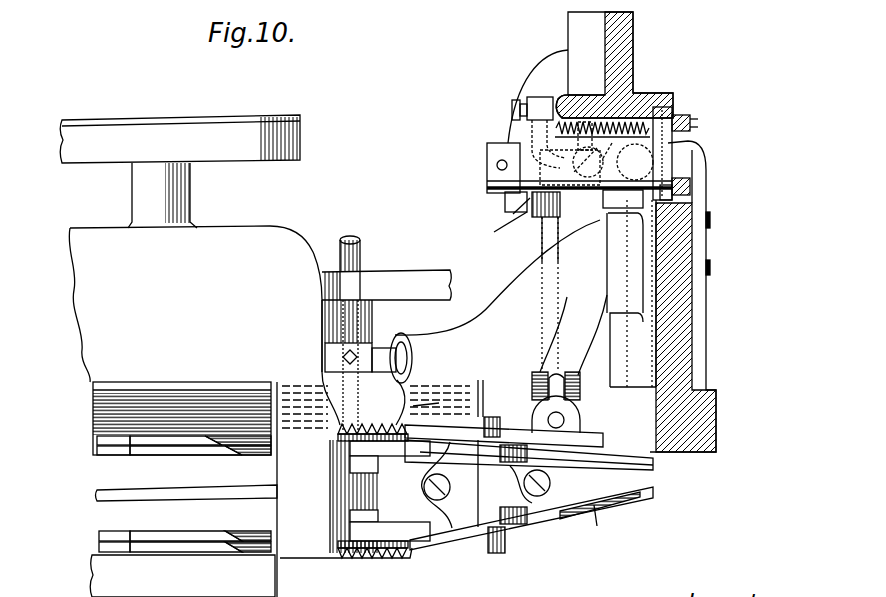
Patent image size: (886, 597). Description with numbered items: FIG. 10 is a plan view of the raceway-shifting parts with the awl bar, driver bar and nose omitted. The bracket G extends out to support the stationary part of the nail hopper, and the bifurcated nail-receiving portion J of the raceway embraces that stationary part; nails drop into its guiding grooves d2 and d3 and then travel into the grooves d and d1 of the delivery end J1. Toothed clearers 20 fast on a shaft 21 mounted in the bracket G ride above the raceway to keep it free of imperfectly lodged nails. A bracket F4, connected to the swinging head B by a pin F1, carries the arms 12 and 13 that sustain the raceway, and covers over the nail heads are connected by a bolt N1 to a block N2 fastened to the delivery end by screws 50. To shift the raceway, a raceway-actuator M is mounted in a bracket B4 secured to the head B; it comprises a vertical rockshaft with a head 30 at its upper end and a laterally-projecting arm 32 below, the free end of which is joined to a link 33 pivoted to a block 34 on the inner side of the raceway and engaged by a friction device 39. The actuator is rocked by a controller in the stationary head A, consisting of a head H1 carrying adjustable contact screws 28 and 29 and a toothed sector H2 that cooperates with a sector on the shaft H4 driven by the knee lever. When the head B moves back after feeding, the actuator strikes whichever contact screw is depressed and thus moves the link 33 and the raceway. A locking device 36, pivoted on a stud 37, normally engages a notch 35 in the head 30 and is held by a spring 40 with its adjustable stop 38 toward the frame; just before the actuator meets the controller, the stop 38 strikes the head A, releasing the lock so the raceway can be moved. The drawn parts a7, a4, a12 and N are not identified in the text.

The upper arm of frame a7 is at (302, 147).
The frame body a4 is at (293, 240).
The frame block a12 is at (250, 576).
The nail-guiding groove d3 is at (200, 447).
The nail-guiding groove d2 is at (191, 541).
The nail-receiving portion of the raceway J is at (252, 538).
The shaft 21 is at (350, 238).
The bracket G is at (416, 277).
The toothed clearers 20 is at (382, 424).
The arm 13 is at (495, 418).
The bolt N1 is at (503, 556).
The arm 12 is at (435, 401).
The block 34 is at (574, 430).
The nail-guiding groove d1 is at (655, 464).
The nail-guiding groove d is at (655, 492).
The jaw lever N is at (598, 457).
The screws 50 is at (447, 483).
The block N2 is at (477, 483).
The delivery end of the raceway J1 is at (599, 525).
The stationary head A is at (614, 65).
The shaft H4 is at (520, 142).
The adjustable stop 38 is at (511, 114).
The locking device 36 is at (537, 97).
The spring 40 is at (582, 97).
The notch 35 is at (650, 100).
The raceway-actuator M is at (668, 152).
The contact screw 28 is at (692, 124).
The head H1 is at (693, 141).
The contact screw 29 is at (692, 191).
The head 30 is at (693, 184).
The bracket B4 is at (704, 242).
The swinging head B is at (685, 296).
The pin F1 is at (672, 346).
The bracket F4 is at (518, 295).
The link 33 is at (546, 233).
The stud 37 is at (603, 200).
The laterally-projecting arm 32 is at (511, 210).
The friction device 39 is at (498, 228).
The toothed sector H2 is at (506, 202).